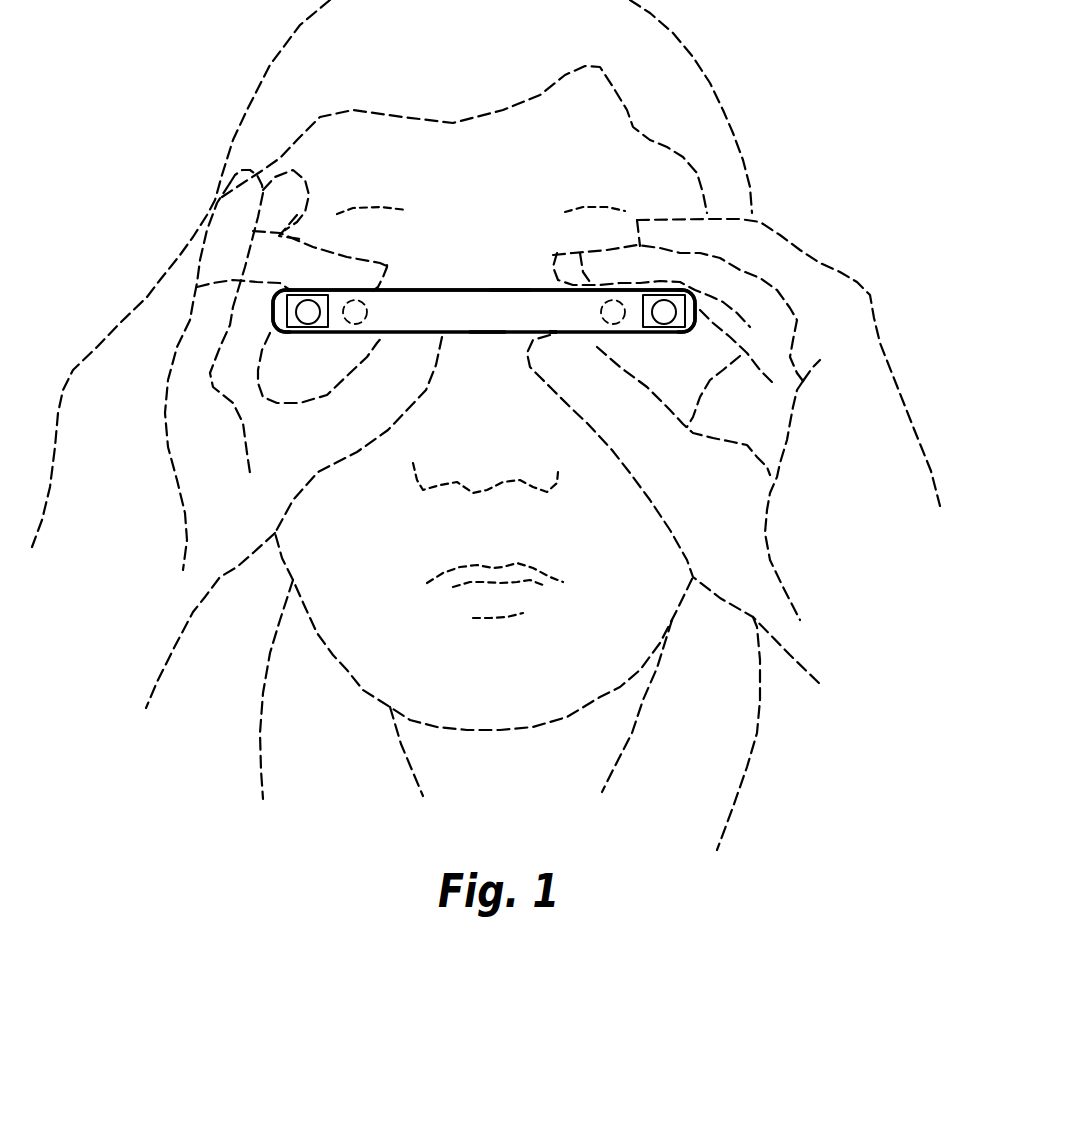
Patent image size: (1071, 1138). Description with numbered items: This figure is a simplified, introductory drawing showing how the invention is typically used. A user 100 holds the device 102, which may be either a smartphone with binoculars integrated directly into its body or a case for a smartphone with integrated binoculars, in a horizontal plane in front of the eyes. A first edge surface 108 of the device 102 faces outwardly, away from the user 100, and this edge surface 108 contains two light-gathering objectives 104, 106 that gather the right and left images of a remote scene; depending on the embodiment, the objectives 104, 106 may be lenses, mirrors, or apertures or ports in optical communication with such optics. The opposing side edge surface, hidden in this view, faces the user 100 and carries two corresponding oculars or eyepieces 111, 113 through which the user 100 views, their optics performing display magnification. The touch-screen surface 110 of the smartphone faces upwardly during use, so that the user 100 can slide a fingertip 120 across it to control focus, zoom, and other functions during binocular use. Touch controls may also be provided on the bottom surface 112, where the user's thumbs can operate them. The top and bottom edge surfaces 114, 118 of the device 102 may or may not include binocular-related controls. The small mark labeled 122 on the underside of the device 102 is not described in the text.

The user 100 is at (750, 97).
The device 102 is at (451, 252).
The light-gathering objective 104 is at (298, 344).
The light-gathering objective 106 is at (664, 305).
The first edge surface 108 is at (472, 303).
The touch-screen surface 110 is at (507, 273).
The ocular or eyepiece 111 is at (353, 367).
The bottom surface 112 is at (462, 380).
The ocular or eyepiece 113 is at (618, 360).
The top edge surface 114 is at (168, 286).
The bottom edge surface 118 is at (802, 276).
The fingertip 120 is at (410, 258).
The indicator 122 is at (520, 385).